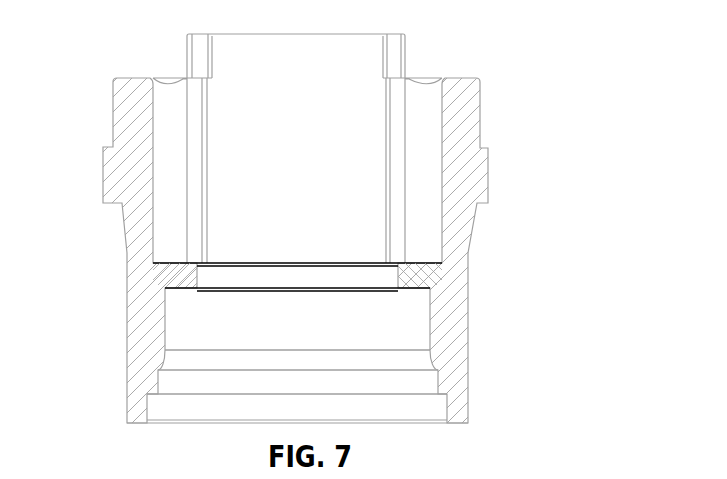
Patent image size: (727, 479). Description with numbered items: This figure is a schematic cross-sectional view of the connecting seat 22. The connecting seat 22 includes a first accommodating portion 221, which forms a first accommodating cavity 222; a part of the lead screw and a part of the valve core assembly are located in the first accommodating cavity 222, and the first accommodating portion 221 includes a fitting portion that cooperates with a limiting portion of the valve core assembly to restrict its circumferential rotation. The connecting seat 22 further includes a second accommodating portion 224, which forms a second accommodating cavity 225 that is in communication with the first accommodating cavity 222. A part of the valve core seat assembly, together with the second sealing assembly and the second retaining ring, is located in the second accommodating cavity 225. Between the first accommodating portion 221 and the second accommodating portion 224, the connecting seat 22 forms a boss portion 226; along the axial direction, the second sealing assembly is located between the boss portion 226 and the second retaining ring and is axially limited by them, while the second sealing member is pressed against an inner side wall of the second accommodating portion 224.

The connecting seat 22 is at (512, 75).
The first accommodating portion 221 is at (442, 200).
The first accommodating cavity 222 is at (242, 163).
The second accommodating portion 224 is at (432, 322).
The second accommodating cavity 225 is at (292, 337).
The boss portion 226 is at (175, 278).